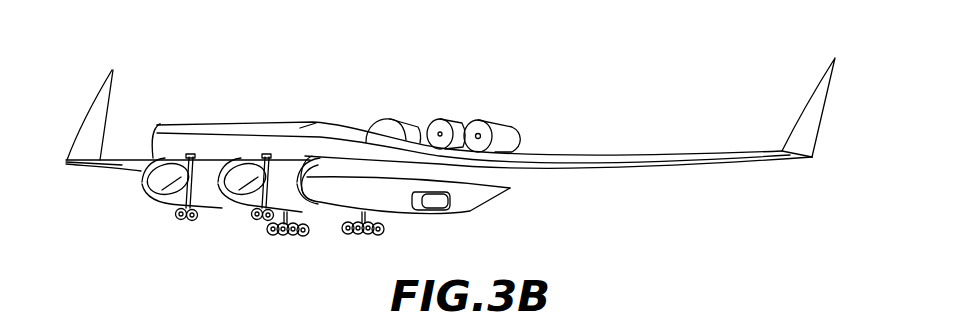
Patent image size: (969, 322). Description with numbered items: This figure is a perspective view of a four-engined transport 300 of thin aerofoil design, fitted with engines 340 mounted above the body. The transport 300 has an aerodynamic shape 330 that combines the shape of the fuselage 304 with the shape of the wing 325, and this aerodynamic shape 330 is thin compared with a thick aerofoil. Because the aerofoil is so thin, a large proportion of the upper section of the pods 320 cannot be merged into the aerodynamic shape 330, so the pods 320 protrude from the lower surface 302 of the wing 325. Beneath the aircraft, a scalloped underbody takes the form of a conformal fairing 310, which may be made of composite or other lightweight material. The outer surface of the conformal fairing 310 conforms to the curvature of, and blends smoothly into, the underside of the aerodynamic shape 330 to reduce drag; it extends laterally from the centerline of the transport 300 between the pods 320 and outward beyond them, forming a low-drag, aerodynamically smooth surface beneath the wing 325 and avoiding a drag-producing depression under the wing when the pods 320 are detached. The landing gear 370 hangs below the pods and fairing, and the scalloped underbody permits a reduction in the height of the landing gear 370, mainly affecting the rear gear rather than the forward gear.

The transport 300 is at (663, 78).
The lower surface of the wing 302 is at (649, 173).
The fuselage 304 is at (176, 126).
The conformal fairing 310 is at (299, 161).
The pods 320 is at (252, 177).
The wing 325 is at (707, 153).
The aerodynamic shape 330 is at (351, 135).
The engines 340 is at (390, 121).
The landing gear 370 is at (178, 219).